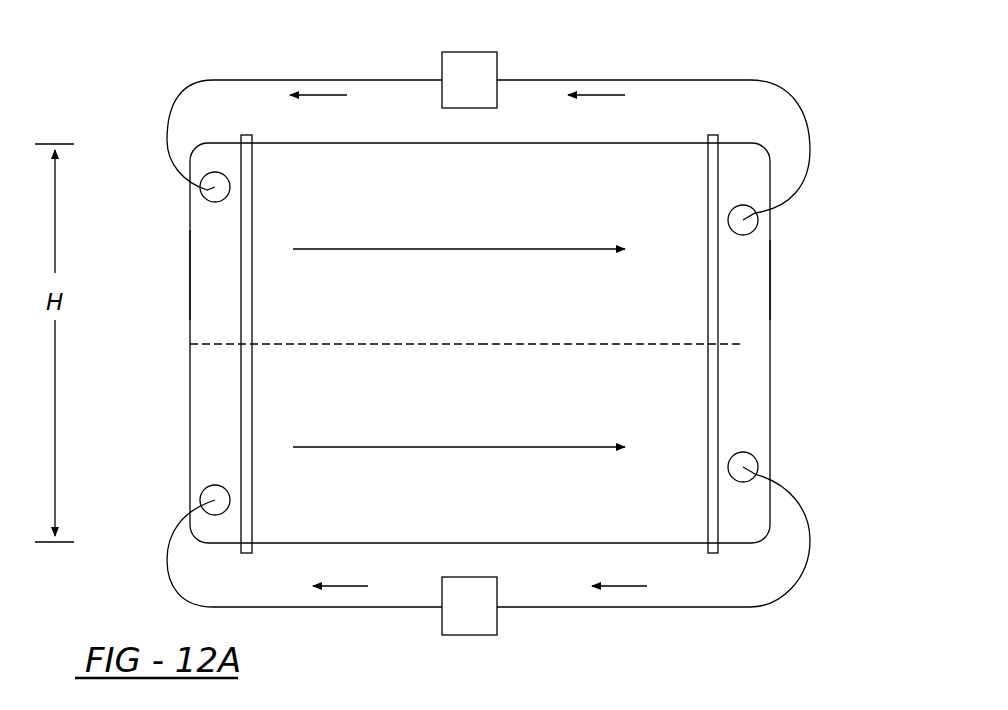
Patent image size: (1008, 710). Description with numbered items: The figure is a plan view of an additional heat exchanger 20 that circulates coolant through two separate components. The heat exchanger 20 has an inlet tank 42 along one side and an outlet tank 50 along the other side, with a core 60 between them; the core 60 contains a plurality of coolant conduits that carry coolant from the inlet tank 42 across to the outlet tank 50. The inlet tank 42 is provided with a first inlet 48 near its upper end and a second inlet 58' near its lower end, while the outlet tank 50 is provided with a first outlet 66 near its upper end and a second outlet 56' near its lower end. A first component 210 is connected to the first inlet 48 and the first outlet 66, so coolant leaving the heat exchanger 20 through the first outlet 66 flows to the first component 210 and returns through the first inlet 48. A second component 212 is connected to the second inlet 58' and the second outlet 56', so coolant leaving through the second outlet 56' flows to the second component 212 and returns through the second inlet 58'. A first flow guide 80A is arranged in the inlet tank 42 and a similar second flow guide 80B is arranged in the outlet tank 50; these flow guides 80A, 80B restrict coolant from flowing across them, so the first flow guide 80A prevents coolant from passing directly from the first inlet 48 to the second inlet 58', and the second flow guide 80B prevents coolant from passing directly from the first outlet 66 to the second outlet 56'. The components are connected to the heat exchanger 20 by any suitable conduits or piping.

The heat exchanger 20 is at (737, 45).
The first component 210 is at (475, 52).
The second component 212 is at (475, 635).
The core 60 is at (310, 160).
The first inlet 48 is at (210, 208).
The inlet tank 42 is at (205, 280).
The first flow guide 80A is at (209, 344).
The second flow guide 80B is at (743, 344).
The second inlet 58' is at (166, 487).
The first outlet 66 is at (755, 232).
The outlet tank 50 is at (743, 275).
The second outlet 56' is at (793, 456).